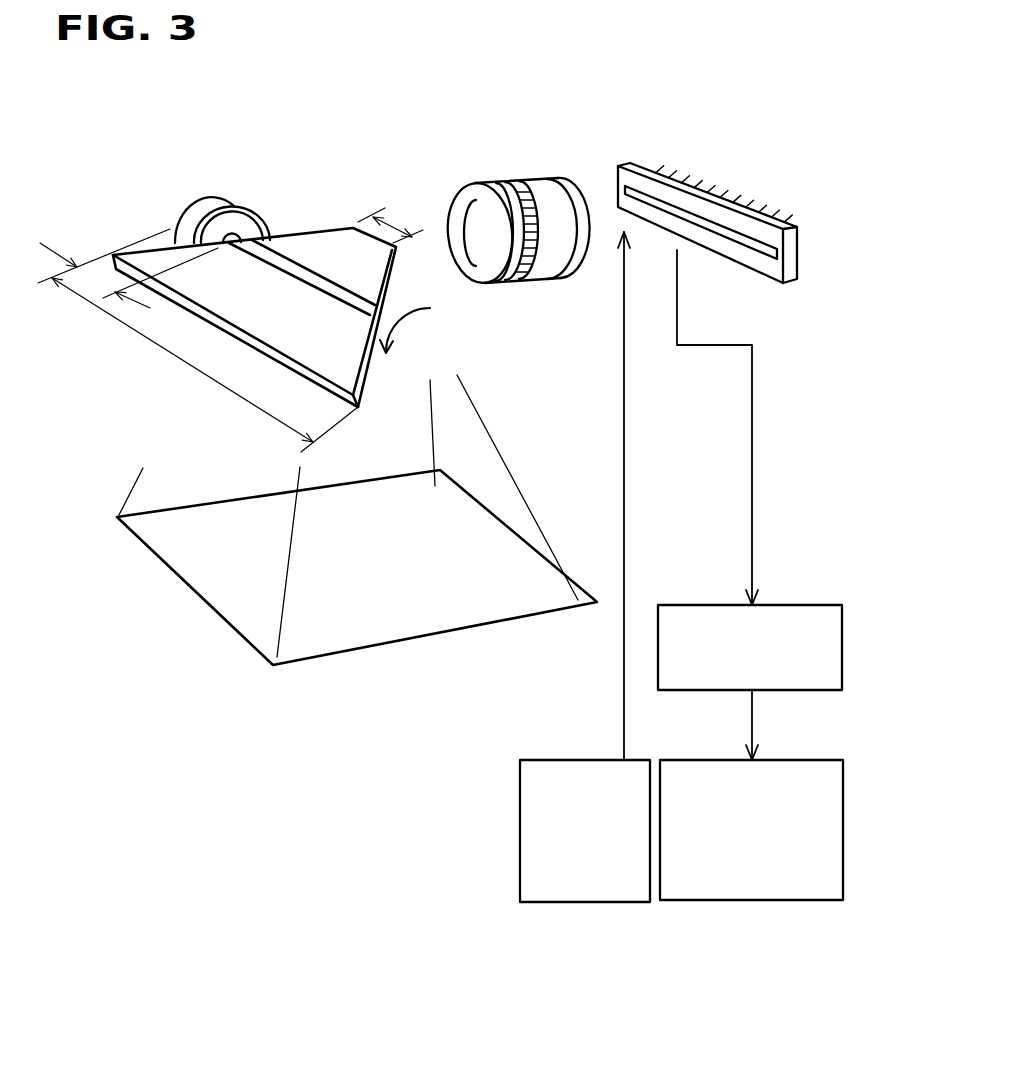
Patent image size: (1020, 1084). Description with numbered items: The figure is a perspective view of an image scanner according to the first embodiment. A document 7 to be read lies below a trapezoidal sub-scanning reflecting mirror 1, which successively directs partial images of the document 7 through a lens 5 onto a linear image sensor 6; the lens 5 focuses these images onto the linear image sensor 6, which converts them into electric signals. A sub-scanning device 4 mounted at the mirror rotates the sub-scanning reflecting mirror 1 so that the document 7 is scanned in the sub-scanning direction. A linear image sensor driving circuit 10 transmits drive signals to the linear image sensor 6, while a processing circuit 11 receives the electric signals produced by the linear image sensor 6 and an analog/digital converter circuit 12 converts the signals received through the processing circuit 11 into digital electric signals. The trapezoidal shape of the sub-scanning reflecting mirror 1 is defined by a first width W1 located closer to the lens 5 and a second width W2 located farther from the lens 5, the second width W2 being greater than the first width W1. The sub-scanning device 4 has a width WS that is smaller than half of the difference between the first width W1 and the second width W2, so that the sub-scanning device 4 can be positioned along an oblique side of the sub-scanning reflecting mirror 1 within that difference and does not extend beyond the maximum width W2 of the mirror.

The sub-scanning reflecting mirror 1 is at (306, 233).
The sub-scanning device 4 is at (222, 199).
The lens 5 is at (527, 281).
The linear image sensor 6 is at (617, 183).
The document 7 is at (450, 634).
The linear image sensor driving circuit 10 is at (563, 759).
The processing circuit 11 is at (805, 604).
The analog/digital converter circuit 12 is at (802, 759).
The width of the sub-scanning device WS is at (102, 283).
The first width W1 is at (403, 226).
The second width W2 is at (158, 347).